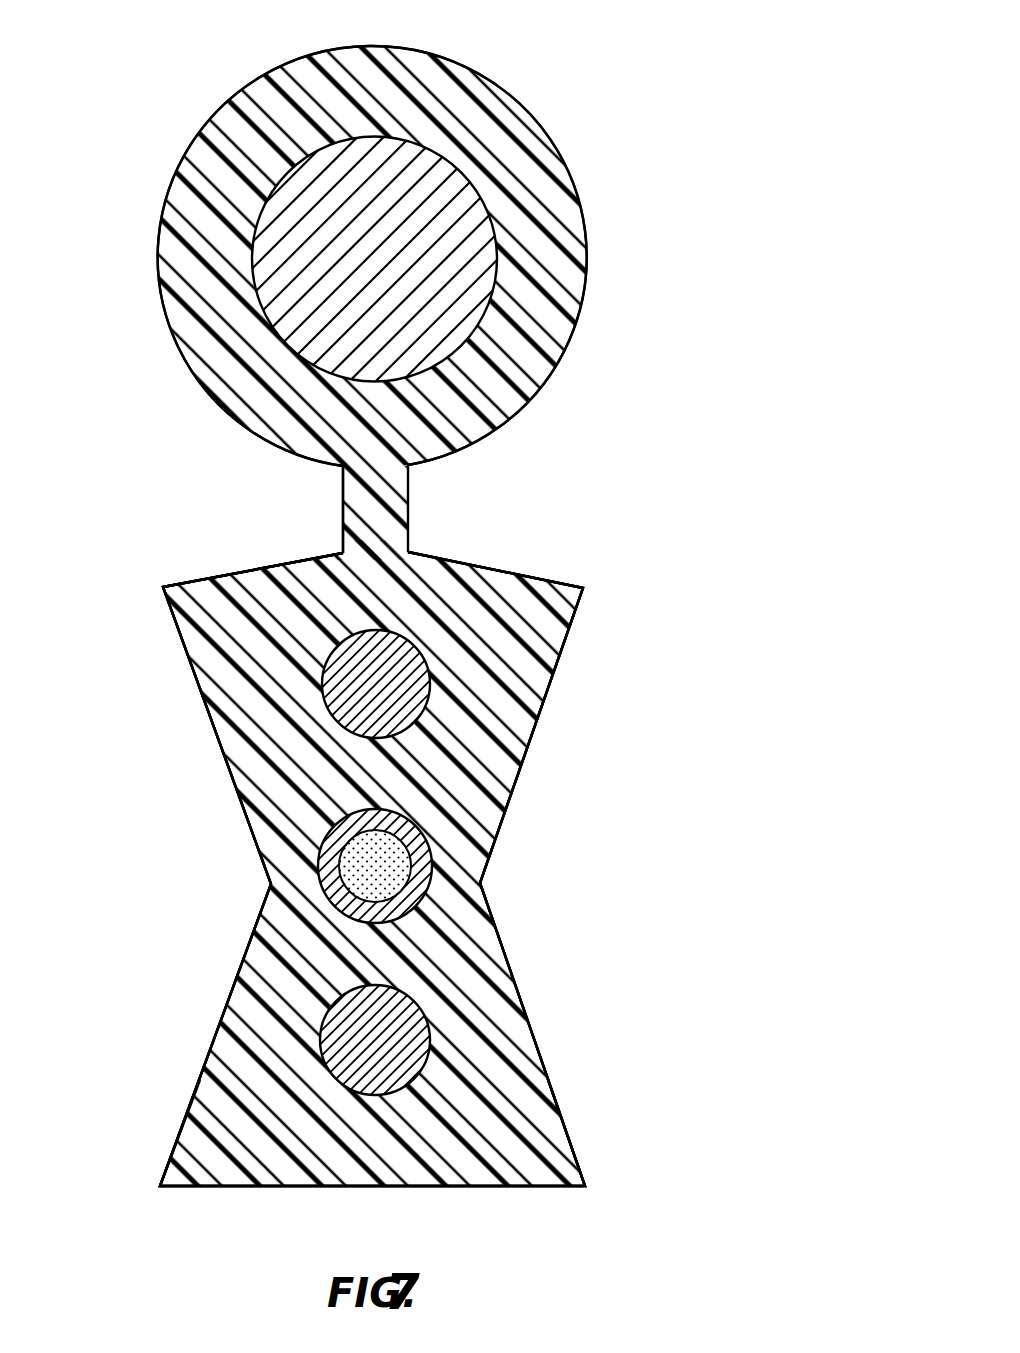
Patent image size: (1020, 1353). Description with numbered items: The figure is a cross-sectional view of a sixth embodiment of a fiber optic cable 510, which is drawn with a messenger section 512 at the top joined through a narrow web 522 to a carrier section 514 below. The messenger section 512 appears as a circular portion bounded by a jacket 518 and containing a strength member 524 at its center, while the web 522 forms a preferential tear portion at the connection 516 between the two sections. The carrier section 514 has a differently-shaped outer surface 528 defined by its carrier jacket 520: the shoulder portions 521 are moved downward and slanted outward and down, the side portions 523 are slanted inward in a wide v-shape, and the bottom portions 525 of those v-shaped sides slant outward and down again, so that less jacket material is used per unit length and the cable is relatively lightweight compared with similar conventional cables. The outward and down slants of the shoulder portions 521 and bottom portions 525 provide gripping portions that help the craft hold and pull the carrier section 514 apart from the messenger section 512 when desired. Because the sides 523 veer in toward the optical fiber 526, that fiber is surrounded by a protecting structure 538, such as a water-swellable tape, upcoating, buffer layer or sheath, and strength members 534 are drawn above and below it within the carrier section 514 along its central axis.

The fiber optic cable 510 is at (674, 266).
The messenger section 512 is at (551, 72).
The carrier section 514 is at (716, 716).
The web connecting portion 516 is at (276, 568).
The outer jacket of first cable portion 518 is at (186, 344).
The carrier jacket 520 is at (212, 657).
The shoulder portions 521 is at (567, 580).
The web 522 is at (408, 518).
The side portions 523 is at (190, 829).
The inner conductor of first cable portion 524 is at (475, 200).
The bottom portions 525 is at (560, 1120).
The optical fiber 526 is at (412, 832).
The outer surface 528 is at (505, 948).
The strength members 534 is at (410, 1040).
The protecting structure 538 is at (408, 846).